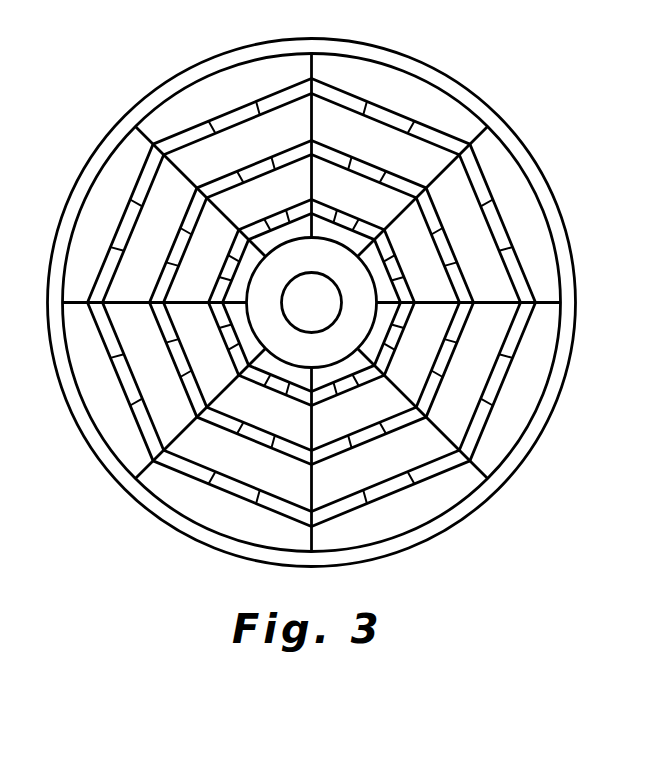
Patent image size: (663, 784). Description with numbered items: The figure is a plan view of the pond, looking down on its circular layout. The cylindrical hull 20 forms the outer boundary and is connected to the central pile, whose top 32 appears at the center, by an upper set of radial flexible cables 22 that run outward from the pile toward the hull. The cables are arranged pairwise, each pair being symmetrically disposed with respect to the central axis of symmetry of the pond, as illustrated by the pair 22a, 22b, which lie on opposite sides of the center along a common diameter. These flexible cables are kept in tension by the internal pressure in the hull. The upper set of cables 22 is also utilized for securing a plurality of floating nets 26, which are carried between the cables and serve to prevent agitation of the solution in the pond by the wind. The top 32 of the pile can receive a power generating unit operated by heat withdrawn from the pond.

The cylindrical hull 20 is at (538, 183).
The upper set of radial flexible cables 22 is at (312, 74).
The cable of symmetric pair 22a is at (151, 141).
The cable of symmetric pair 22b is at (486, 467).
The floating nets 26 is at (356, 232).
The top 32 is at (266, 307).